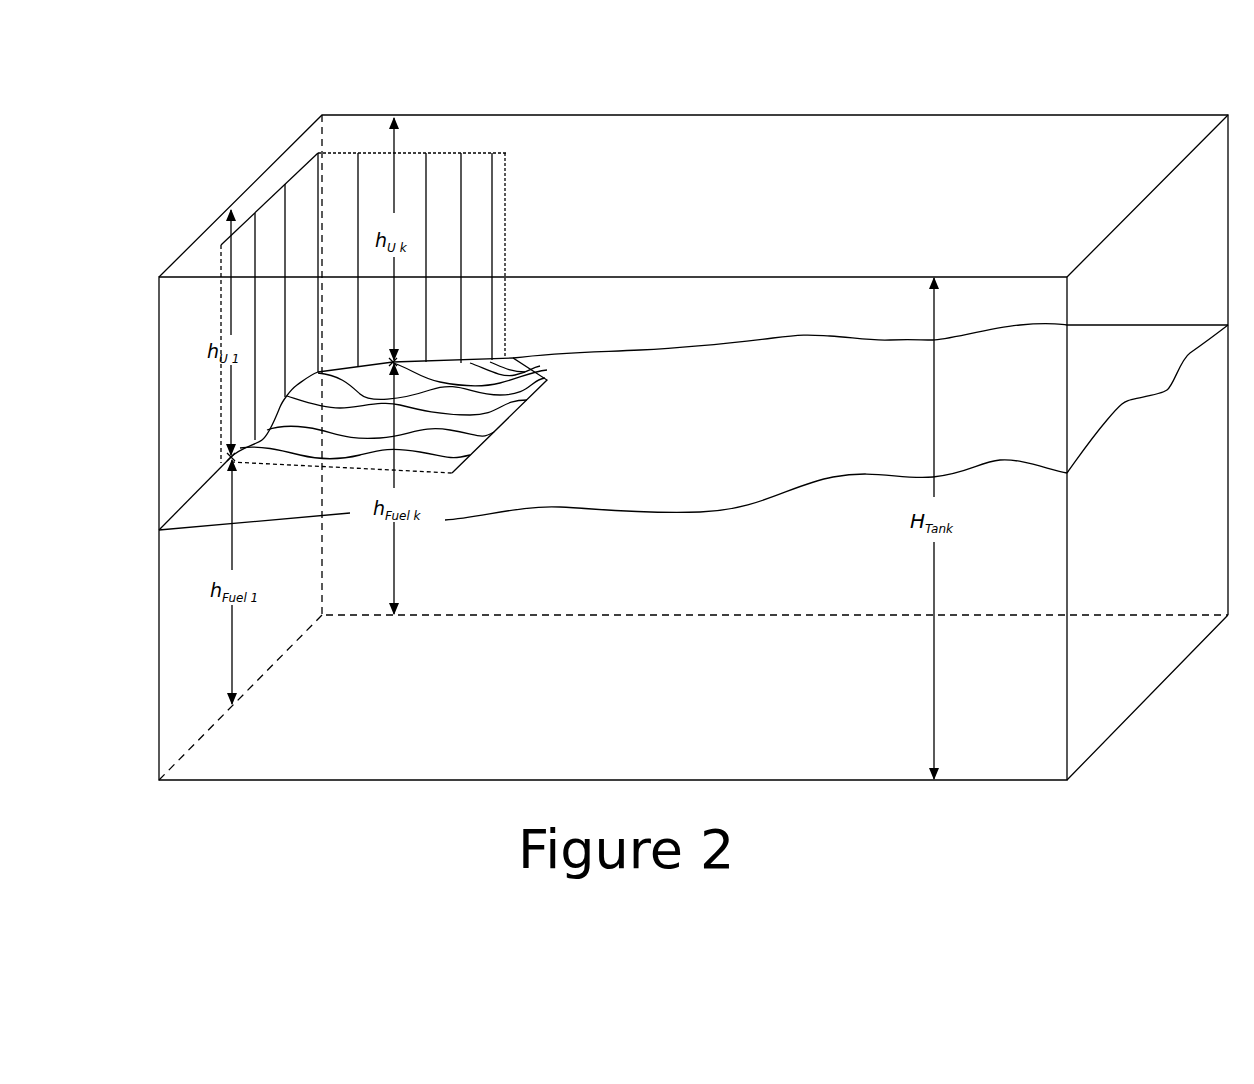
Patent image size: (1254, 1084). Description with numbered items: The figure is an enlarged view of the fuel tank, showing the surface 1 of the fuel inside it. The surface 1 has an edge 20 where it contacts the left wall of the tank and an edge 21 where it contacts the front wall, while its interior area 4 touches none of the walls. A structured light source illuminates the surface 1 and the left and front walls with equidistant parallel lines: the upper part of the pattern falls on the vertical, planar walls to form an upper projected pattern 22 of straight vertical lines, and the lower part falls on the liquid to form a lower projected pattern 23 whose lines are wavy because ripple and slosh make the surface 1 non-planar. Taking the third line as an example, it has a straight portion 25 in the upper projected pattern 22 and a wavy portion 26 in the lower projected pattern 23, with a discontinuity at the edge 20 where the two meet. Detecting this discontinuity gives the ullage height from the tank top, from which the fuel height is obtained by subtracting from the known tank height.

The surface of the fuel 1 is at (803, 370).
The interior area 4 is at (737, 418).
The edge 20 is at (203, 482).
The edge 21 is at (640, 350).
The upper projected pattern 22 is at (478, 227).
The lower projected pattern 23 is at (470, 428).
The straight portion 25 is at (285, 228).
The wavy portion 26 is at (360, 420).